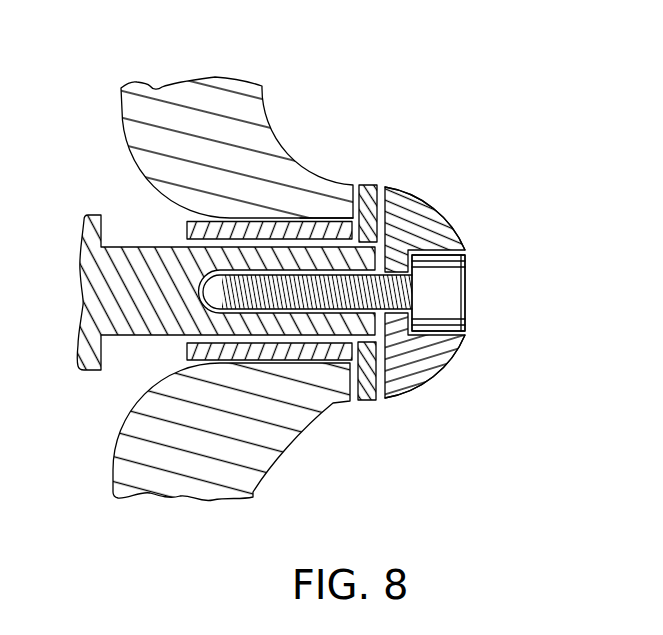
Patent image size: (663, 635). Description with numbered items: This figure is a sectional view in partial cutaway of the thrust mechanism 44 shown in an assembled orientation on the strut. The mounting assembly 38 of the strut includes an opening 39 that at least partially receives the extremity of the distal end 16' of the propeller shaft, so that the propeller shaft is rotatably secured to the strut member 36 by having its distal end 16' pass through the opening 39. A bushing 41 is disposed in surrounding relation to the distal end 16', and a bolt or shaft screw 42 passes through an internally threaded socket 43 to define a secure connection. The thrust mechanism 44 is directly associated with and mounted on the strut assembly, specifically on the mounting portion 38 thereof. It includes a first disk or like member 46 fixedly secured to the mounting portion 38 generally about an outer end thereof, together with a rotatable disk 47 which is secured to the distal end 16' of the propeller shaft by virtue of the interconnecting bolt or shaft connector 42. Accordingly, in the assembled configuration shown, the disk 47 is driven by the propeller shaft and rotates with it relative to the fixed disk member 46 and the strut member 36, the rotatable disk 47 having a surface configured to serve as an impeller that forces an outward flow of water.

The strut member 36 is at (284, 84).
The distal end of the propeller shaft 16' is at (215, 249).
The bushing 41 is at (270, 228).
The opening 39 is at (326, 222).
The first disk member 46 is at (375, 188).
The rotatable disk 47 is at (435, 212).
The internally threaded socket 43 is at (207, 288).
The bolt or shaft screw 42 is at (437, 297).
The thrust mechanism 44 is at (445, 389).
The mounting assembly 38 is at (330, 405).